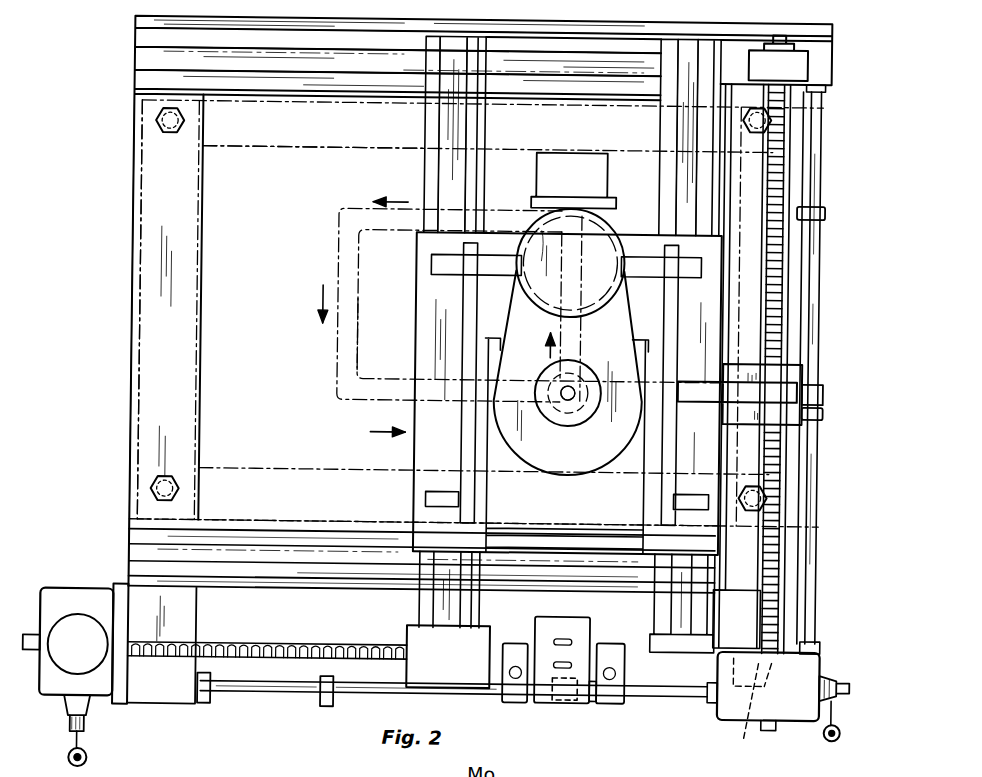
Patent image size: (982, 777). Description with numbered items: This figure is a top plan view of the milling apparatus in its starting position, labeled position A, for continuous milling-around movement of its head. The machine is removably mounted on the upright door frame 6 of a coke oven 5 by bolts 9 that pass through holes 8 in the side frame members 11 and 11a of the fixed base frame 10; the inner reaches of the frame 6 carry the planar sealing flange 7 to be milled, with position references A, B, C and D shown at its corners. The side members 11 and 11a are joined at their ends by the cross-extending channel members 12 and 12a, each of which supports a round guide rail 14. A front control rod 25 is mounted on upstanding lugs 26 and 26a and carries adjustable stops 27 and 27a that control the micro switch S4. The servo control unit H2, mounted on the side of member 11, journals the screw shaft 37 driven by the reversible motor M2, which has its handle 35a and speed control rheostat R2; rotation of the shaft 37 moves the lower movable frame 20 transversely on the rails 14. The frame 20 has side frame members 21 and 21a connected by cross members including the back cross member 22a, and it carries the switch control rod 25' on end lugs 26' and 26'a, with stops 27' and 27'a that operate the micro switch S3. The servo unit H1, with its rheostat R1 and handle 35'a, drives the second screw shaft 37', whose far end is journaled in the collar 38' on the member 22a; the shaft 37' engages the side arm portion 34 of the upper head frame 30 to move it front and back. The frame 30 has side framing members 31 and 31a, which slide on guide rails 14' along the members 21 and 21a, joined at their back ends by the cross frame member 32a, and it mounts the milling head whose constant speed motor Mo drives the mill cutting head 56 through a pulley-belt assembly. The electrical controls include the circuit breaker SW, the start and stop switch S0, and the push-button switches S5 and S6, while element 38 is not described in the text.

The coke oven 5 is at (283, 150).
The upright door frame 6 is at (343, 150).
The sealing flange 7 is at (385, 402).
The holes 8 is at (157, 133).
The bolts 9 is at (153, 122).
The fixed base frame 10 is at (154, 340).
The side frame member 11 is at (131, 365).
The side frame member 11a is at (796, 513).
The cross-extending channel member 12 is at (300, 582).
The cross-extending channel member 12a is at (131, 32).
The guide rail 14 is at (404, 303).
The guide rail member 14' is at (538, 136).
The lower movable frame 20 is at (408, 600).
The side frame member 21 is at (422, 131).
The side frame member 21a is at (657, 131).
The cross member 22a is at (609, 28).
The movement-controlling rod 25 is at (453, 705).
The switch control rod 25' is at (834, 368).
The lug 26 is at (210, 699).
The end lug 26' is at (830, 642).
The lug 26a is at (716, 705).
The end lug 26'a is at (846, 97).
The adjustable stop 27 is at (311, 701).
The adjustable stop 27' is at (836, 424).
The adjustable stop 27a is at (598, 702).
The adjustable stop 27'a is at (839, 215).
The movable head frame 30 is at (567, 393).
The side framing member 31 is at (486, 493).
The side framing member 31a is at (662, 493).
The cross frame member 32a is at (626, 250).
The side arm portion 34 is at (790, 375).
The handle 35a is at (92, 762).
The handle 35'a is at (859, 733).
The screw shaft 37 is at (268, 629).
The screw shaft 37' is at (815, 370).
The pinion housing 38 is at (748, 707).
The collar 38' is at (815, 58).
The mill cutting head 56 is at (578, 408).
The position A is at (562, 393).
The position B is at (570, 262).
The position C is at (539, 306).
The position D is at (367, 339).
The servo unit H1 is at (792, 722).
The servo control unit H2 is at (97, 592).
The reversible electric motor M2 is at (67, 641).
The motor Mo is at (596, 316).
The speed control rheostat R1 is at (846, 672).
The speed control rheostat R2 is at (70, 724).
The start and stop switch S0 is at (580, 618).
The micro switch S3 is at (824, 392).
The micro switch S4 is at (570, 702).
The push-button switch S5 is at (612, 642).
The push-button switch S6 is at (517, 643).
The circuit breaker SW is at (534, 168).